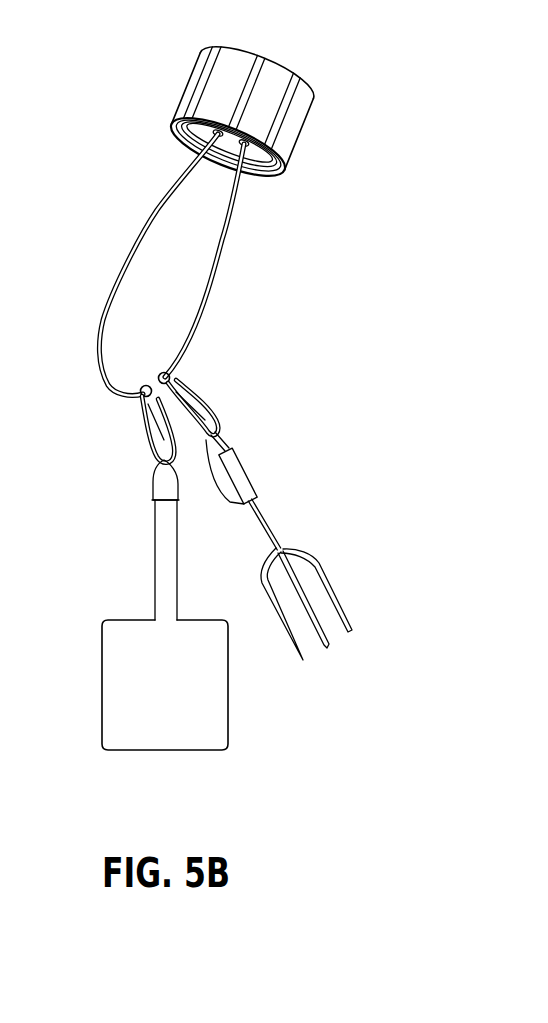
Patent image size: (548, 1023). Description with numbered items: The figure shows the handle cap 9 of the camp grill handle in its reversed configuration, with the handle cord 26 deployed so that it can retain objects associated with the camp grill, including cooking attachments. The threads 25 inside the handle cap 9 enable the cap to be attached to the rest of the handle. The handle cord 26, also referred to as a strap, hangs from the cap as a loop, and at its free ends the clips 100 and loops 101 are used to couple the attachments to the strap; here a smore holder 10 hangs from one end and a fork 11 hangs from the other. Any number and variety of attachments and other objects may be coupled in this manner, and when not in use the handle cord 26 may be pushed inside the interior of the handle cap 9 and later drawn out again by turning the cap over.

The handle cap 9 is at (281, 72).
The threads 25 is at (261, 167).
The handle cord 26 is at (223, 272).
The clips 100 is at (197, 401).
The loops 101 is at (152, 497).
The fork 11 is at (278, 538).
The smore holder 10 is at (220, 708).